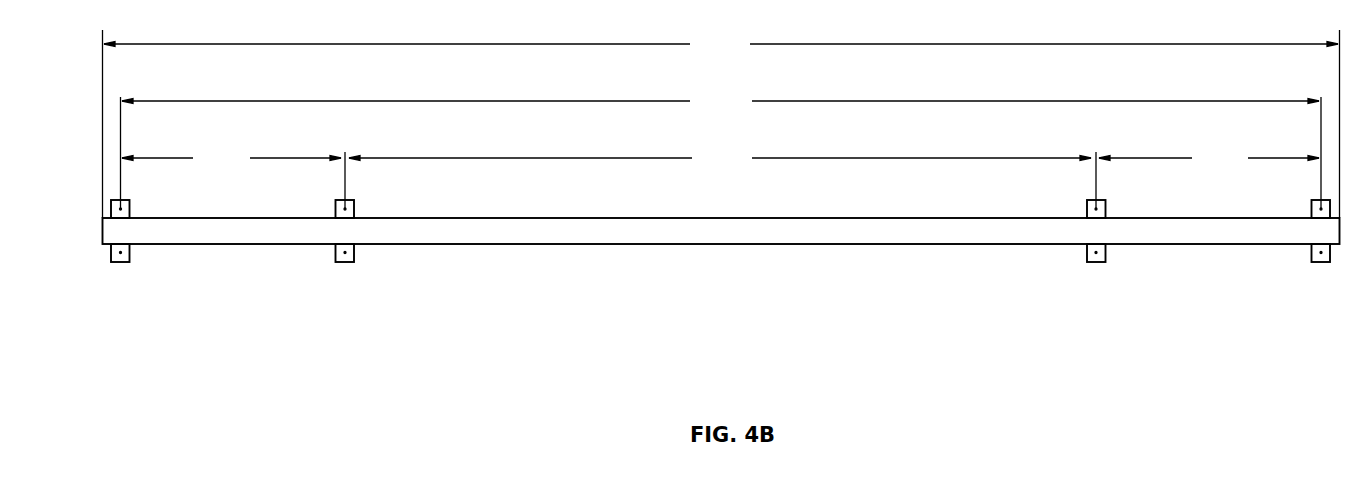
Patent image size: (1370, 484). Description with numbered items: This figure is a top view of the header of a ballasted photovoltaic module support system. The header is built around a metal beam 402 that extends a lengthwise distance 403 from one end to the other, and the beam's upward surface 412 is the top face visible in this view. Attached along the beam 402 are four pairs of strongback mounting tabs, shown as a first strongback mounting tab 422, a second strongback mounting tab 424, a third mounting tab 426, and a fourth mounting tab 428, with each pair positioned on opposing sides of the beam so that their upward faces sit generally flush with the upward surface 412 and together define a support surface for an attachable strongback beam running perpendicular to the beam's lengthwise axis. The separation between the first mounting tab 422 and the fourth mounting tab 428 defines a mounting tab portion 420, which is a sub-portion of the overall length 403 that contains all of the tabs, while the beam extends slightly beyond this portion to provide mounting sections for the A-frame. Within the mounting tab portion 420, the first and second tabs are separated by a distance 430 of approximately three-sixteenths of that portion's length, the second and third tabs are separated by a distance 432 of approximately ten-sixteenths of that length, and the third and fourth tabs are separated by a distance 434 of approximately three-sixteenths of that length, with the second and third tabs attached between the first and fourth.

The metal beam 402 is at (720, 244).
The upward surface of the beam 412 is at (549, 229).
The first strongback mounting tab 422 is at (121, 262).
The second strongback mounting tab 424 is at (347, 262).
The third mounting tab 426 is at (1096, 262).
The fourth mounting tab 428 is at (1321, 262).
The lengthwise distance 403 is at (721, 44).
The mounting tab portion 420 is at (720, 101).
The distance between first and second mounting tabs 430 is at (231, 158).
The distance between second and third mounting tabs 432 is at (720, 158).
The distance between third and fourth mounting tabs 434 is at (1209, 158).